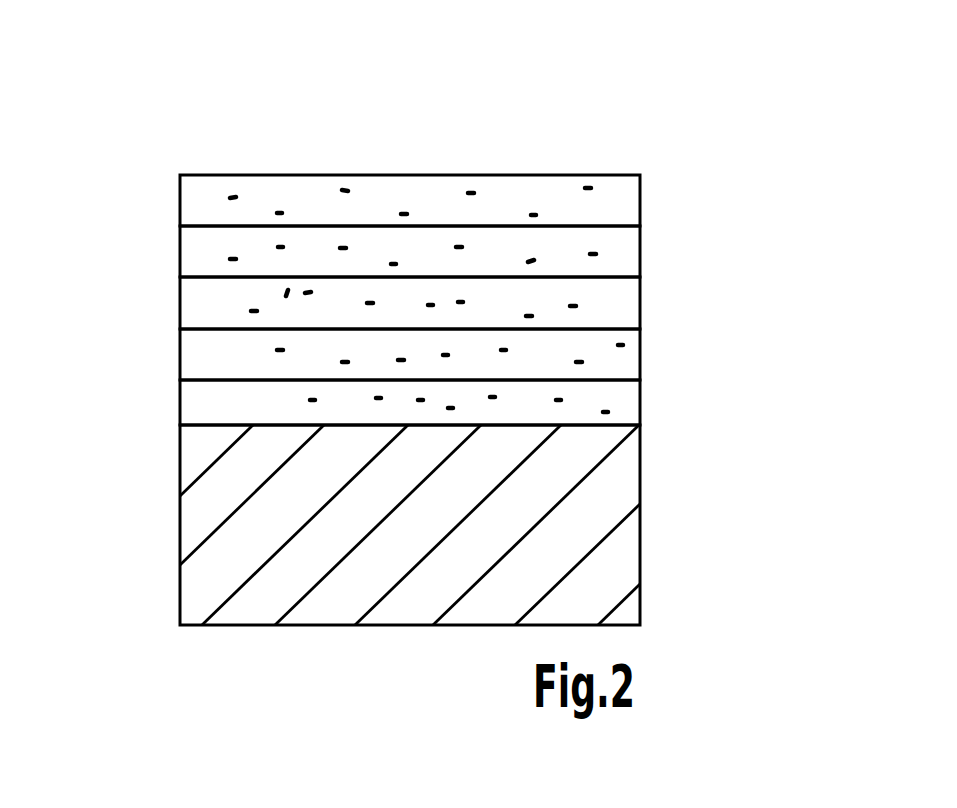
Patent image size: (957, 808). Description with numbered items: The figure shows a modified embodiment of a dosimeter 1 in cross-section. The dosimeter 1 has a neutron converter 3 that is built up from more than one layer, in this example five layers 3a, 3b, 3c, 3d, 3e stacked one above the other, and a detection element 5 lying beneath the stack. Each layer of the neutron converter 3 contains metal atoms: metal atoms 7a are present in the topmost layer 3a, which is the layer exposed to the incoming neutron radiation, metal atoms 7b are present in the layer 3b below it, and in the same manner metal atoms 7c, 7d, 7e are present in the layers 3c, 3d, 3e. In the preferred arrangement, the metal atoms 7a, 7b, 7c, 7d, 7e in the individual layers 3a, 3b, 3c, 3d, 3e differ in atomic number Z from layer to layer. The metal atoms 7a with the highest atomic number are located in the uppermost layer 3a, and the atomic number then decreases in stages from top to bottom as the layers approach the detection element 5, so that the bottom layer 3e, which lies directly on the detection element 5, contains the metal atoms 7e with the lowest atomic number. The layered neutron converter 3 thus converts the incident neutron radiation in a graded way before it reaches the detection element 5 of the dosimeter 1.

The dosimeter 1 is at (424, 151).
The neutron converter 3 is at (646, 235).
The topmost layer 3a is at (180, 196).
The layer below topmost layer 3b is at (180, 252).
The third layer 3c is at (180, 304).
The fourth layer 3d is at (180, 357).
The bottom layer 3e is at (180, 405).
The detection element 5 is at (643, 521).
The metal atoms in topmost layer 7a is at (517, 186).
The metal atoms in second layer 7b is at (592, 258).
The metal atoms in third layer 7c is at (595, 304).
The metal atoms in fourth layer 7d is at (597, 355).
The metal atoms in bottom layer 7e is at (595, 401).